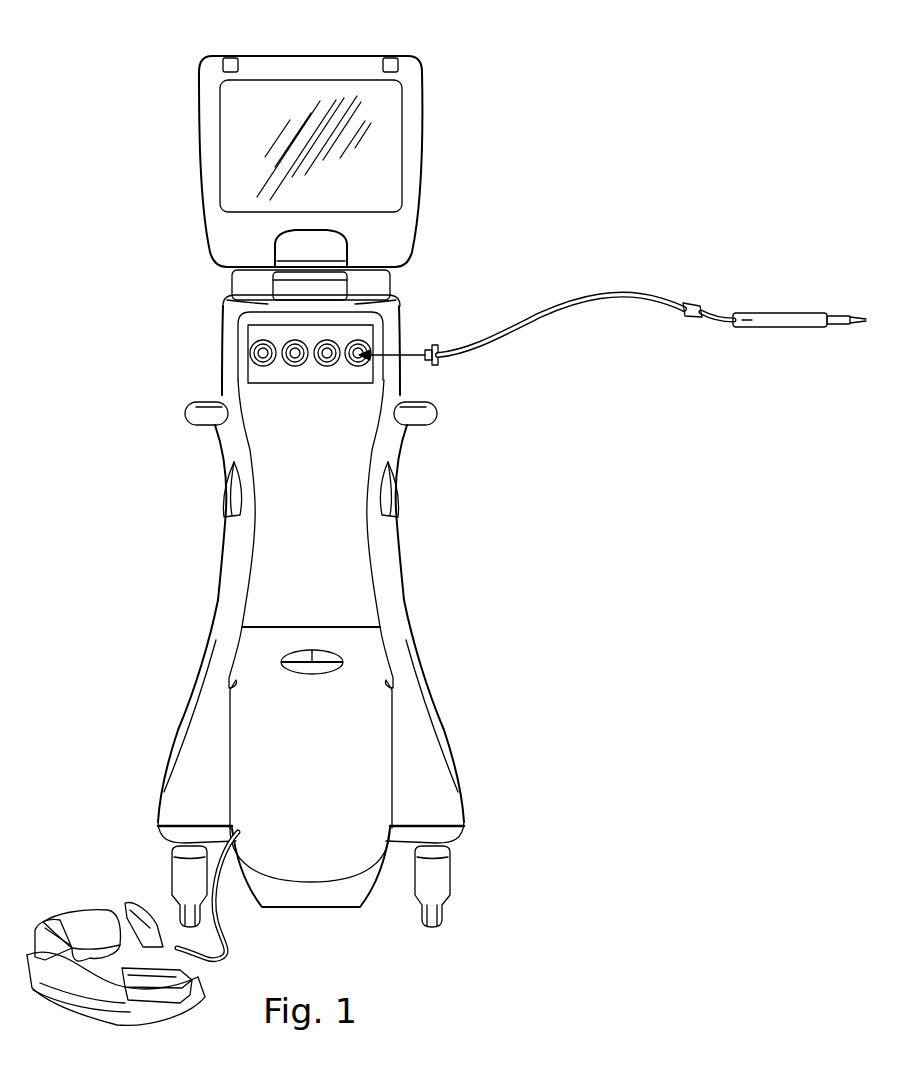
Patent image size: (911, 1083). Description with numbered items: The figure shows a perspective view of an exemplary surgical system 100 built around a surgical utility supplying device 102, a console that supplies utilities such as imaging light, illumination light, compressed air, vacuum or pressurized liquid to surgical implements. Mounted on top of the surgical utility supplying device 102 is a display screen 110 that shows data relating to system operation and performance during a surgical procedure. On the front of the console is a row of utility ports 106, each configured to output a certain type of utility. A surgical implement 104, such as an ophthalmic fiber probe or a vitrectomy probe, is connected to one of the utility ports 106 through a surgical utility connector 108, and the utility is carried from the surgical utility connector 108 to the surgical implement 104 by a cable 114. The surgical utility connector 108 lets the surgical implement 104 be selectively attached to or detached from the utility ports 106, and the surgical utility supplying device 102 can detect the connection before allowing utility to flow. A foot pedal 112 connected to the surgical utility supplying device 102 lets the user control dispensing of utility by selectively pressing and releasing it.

The surgical system 100 is at (603, 68).
The surgical utility supplying device 102 is at (199, 573).
The surgical implement 104 is at (783, 297).
The utility port 106 is at (295, 368).
The surgical utility connector 108 is at (433, 345).
The display screen 110 is at (198, 142).
The foot pedal 112 is at (82, 913).
The cable 114 is at (627, 292).